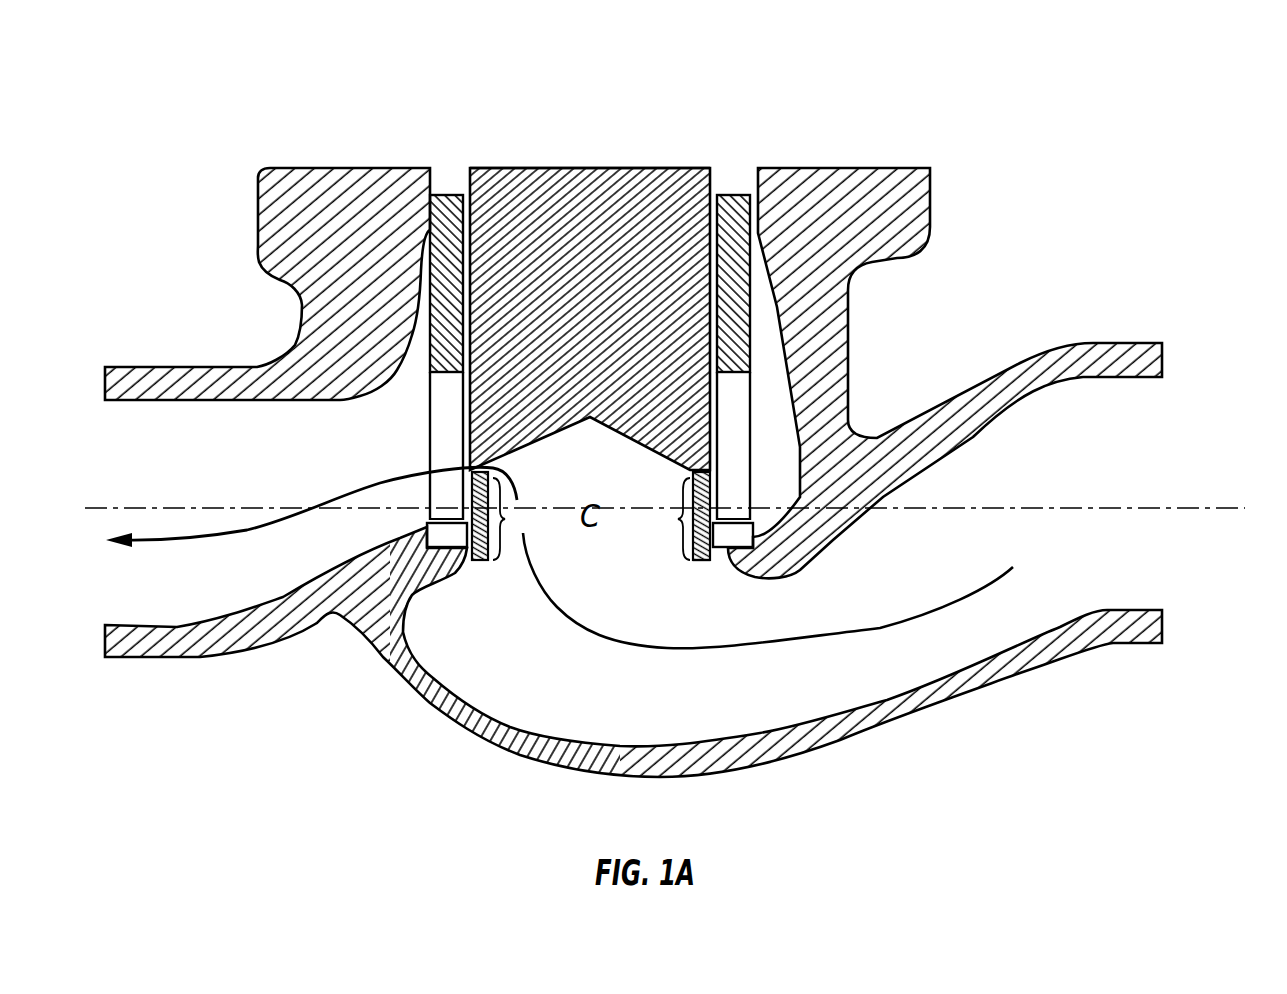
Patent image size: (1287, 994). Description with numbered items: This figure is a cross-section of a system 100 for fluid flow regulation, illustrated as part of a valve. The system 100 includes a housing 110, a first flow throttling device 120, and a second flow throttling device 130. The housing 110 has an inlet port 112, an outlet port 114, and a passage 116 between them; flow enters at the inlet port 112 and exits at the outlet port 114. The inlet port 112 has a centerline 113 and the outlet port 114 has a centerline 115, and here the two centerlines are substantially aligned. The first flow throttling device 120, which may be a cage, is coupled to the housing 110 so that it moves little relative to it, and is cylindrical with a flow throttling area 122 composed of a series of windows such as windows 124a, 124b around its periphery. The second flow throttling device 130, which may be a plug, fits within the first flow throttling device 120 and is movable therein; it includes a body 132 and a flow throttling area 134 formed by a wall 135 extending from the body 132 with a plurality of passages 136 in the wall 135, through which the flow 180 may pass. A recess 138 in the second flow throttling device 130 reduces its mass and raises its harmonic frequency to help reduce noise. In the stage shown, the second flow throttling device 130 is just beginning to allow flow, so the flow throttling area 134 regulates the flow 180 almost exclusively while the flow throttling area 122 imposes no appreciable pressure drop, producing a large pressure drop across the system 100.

The system for fluid flow regulation 100 is at (975, 88).
The housing 110 is at (862, 168).
The inlet port 112 is at (1145, 458).
The centerline of inlet port 113 is at (1167, 508).
The outlet port 114 is at (95, 460).
The centerline of outlet port 115 is at (172, 508).
The passage 116 is at (672, 707).
The first flow throttling device 120 is at (430, 353).
The flow throttling area 122 is at (408, 455).
The window 124a is at (413, 425).
The window 124b is at (760, 437).
The second flow throttling device 130 is at (630, 168).
The body 132 is at (500, 168).
The flow throttling area 134 is at (600, 538).
The wall 135 is at (700, 562).
The passages 136 is at (591, 516).
The recess 138 is at (627, 478).
The flow 180 is at (723, 648).